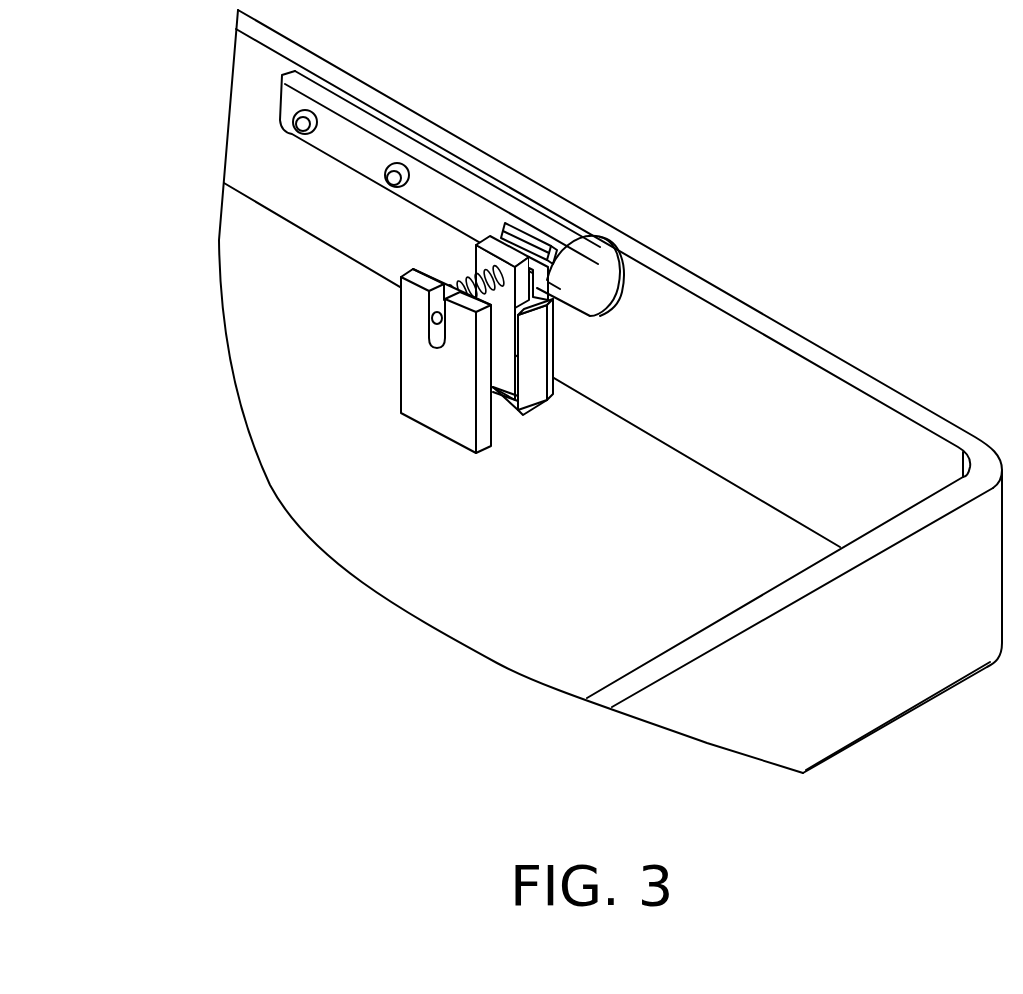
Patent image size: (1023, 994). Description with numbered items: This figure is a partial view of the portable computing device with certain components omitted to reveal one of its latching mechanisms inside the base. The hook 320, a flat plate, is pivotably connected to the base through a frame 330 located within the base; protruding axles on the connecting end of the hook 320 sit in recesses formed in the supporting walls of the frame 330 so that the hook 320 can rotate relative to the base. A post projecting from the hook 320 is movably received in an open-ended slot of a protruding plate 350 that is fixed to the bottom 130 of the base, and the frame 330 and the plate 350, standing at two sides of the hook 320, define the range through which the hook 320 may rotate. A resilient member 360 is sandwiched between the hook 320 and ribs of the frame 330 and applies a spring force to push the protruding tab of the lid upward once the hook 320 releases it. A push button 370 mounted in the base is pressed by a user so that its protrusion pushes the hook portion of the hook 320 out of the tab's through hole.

The bottom 130 is at (471, 565).
The hook 320 is at (503, 253).
The frame 330 is at (537, 353).
The protruding plate 350 is at (431, 378).
The resilient member 360 is at (549, 248).
The push button 370 is at (455, 208).